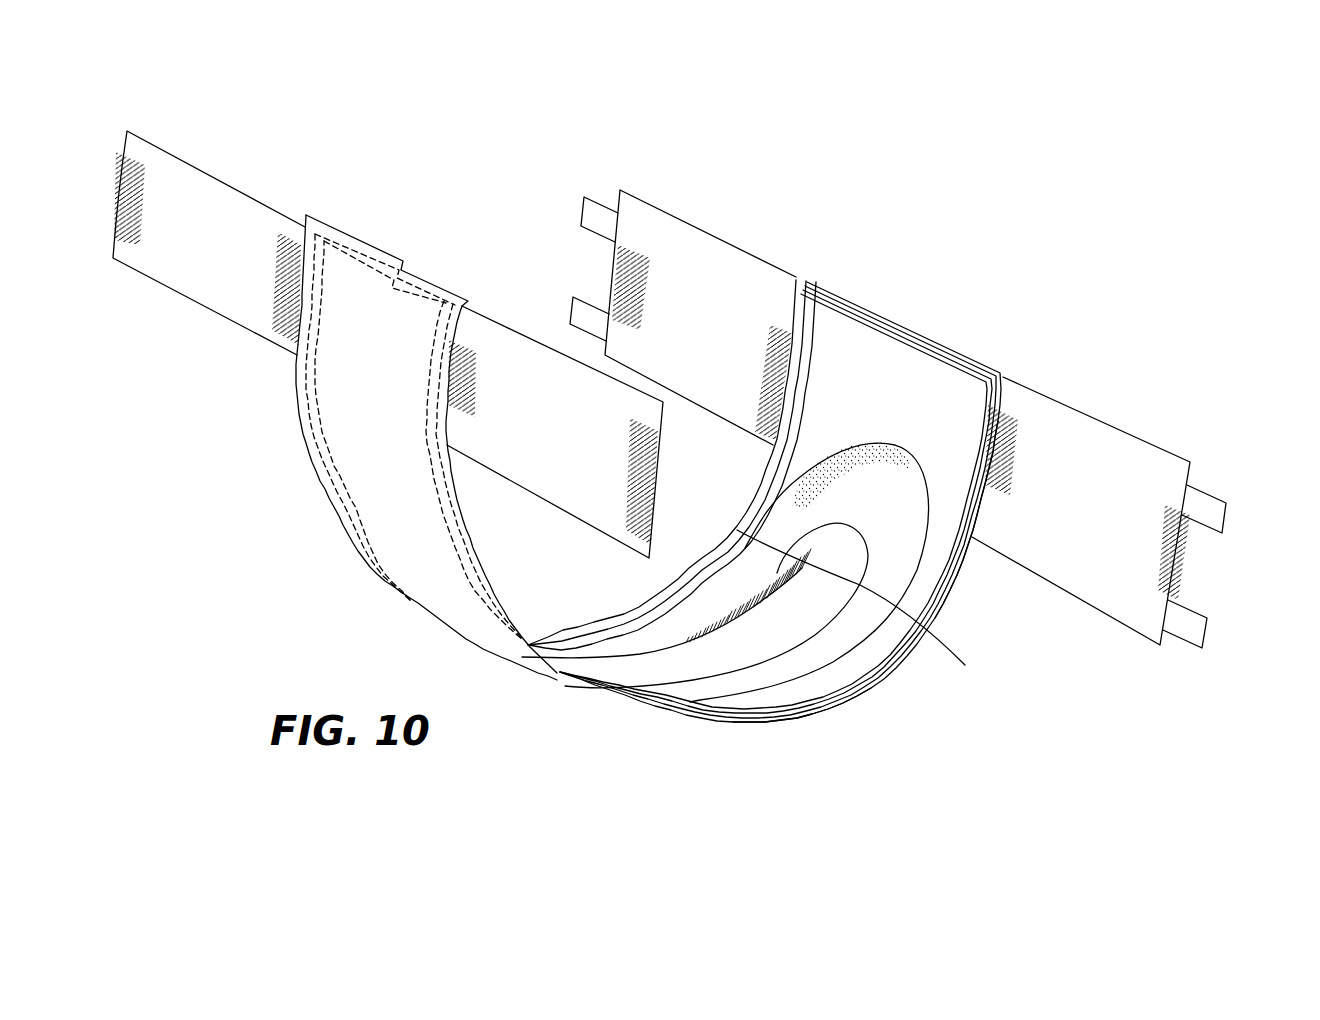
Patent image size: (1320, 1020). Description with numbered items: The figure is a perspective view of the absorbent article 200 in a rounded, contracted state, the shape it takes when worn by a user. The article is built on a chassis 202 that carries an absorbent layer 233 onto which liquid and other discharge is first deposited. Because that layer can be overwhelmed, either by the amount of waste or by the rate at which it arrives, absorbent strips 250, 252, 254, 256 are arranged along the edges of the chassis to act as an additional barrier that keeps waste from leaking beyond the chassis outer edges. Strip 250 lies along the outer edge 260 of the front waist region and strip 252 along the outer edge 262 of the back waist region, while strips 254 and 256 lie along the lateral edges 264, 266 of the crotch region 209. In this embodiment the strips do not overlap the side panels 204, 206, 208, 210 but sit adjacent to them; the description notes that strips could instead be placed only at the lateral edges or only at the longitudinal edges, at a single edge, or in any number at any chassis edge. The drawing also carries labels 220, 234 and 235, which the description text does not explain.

The absorbent article 200 is at (1067, 239).
The chassis 202 is at (880, 677).
The side panel 204 is at (1077, 450).
The side panel 206 is at (695, 258).
The side panel 208 is at (163, 175).
The crotch region 209 is at (550, 633).
The side panel 210 is at (493, 433).
The tab 220 is at (602, 218).
The absorbent layer 233 is at (698, 658).
The curved outer edge 234 is at (337, 407).
The inner stitch line 235 is at (382, 247).
The absorbent strip 250 is at (403, 273).
The absorbent strip 252 is at (917, 337).
The absorbent strip 254 is at (780, 609).
The absorbent strip 256 is at (785, 713).
The outer edge of the front waist region 260 is at (327, 223).
The outer edge of the back waist region 262 is at (860, 300).
The lateral edge of the crotch region 264 is at (763, 463).
The lateral edge of the crotch region 266 is at (963, 573).